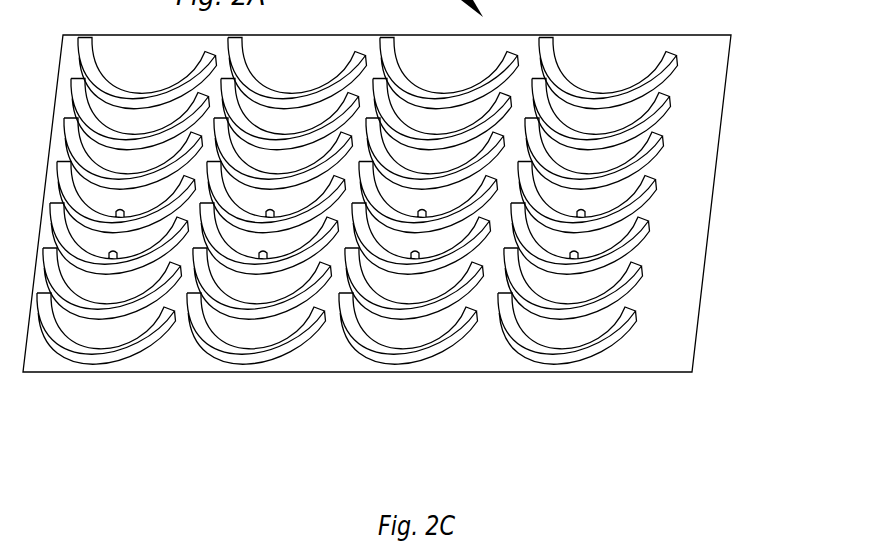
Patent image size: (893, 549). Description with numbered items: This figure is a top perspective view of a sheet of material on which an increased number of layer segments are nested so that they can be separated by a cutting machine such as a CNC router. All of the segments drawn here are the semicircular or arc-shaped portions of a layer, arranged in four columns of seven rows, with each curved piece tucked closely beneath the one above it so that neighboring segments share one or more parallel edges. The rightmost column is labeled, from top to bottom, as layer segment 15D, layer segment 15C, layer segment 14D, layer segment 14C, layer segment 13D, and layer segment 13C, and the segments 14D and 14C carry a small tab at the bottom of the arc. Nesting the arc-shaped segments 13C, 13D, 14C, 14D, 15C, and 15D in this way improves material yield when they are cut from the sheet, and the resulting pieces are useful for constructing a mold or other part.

The layer segment 15D is at (667, 97).
The layer segment 15C is at (660, 136).
The layer segment 14D is at (652, 180).
The layer segment 14C is at (646, 221).
The layer segment 13D is at (640, 267).
The layer segment 13C is at (634, 312).